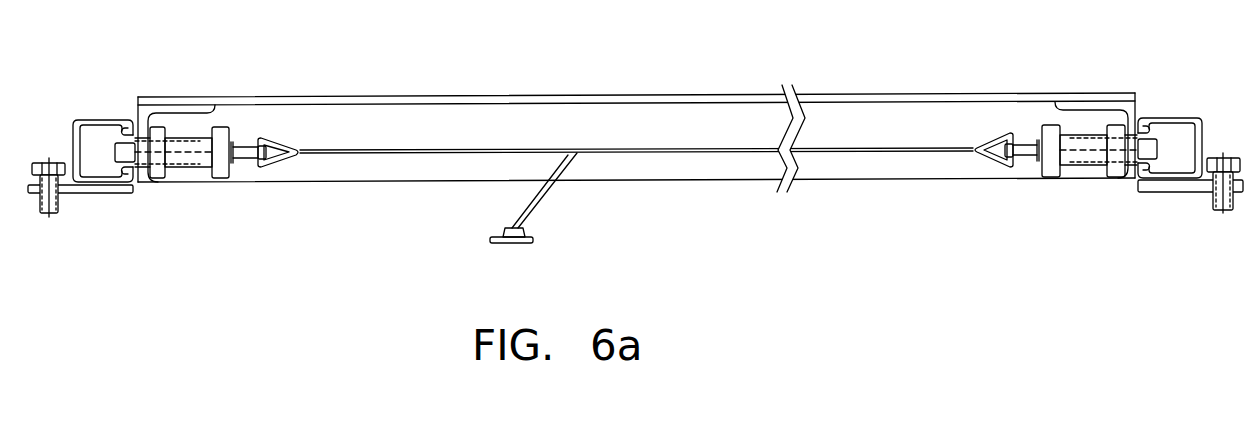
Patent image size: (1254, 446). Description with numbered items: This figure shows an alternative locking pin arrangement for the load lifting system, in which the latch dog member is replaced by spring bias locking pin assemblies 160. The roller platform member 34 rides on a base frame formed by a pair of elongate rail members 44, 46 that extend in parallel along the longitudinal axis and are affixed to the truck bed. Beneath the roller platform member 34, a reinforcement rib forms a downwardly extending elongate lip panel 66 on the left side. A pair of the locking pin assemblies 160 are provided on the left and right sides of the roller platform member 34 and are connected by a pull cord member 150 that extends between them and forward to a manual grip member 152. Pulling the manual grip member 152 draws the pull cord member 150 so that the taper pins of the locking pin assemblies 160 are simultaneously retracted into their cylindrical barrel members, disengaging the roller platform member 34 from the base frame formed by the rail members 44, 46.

The roller platform member 34 is at (338, 102).
The elongate rail member 44 is at (100, 120).
The elongate rail member 46 is at (1174, 117).
The elongate lip panel 66 is at (173, 108).
The pull cord member 150 is at (430, 150).
The manual grip member 152 is at (527, 248).
The spring bias locking pin assembly 160 is at (218, 130).